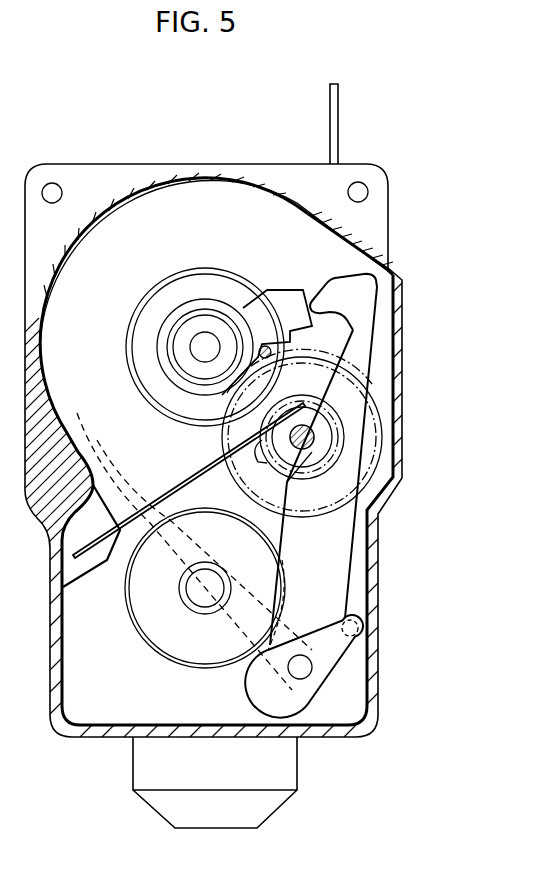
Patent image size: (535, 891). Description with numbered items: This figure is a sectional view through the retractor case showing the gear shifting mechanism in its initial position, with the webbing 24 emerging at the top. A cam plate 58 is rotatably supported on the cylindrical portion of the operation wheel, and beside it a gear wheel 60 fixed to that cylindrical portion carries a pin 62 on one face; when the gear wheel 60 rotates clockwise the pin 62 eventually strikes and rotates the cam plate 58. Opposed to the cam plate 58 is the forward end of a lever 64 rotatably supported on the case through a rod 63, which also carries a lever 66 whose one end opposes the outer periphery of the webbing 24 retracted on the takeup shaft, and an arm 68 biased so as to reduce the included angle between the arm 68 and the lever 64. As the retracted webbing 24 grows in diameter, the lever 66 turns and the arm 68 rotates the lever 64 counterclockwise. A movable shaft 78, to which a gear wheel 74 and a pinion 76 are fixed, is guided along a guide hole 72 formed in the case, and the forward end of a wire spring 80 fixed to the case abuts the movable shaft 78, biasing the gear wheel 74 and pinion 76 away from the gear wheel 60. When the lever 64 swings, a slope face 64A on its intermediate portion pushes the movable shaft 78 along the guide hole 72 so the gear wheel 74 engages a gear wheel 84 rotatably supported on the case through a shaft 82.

The webbing 24 is at (339, 108).
The cam plate 58 is at (292, 292).
The gear wheel 60 is at (209, 266).
The pin 62 is at (272, 352).
The rod 63 is at (290, 672).
The lever 64 is at (340, 573).
The slope face 64A is at (288, 486).
The lever 66 is at (170, 560).
The arm 68 is at (357, 640).
The guide hole 72 is at (256, 460).
The gear wheel 74 is at (387, 411).
The pinion 76 is at (373, 384).
The movable shaft 78 is at (314, 440).
The wire spring 80 is at (185, 477).
The shaft 82 is at (192, 607).
The gear wheel 84 is at (177, 667).